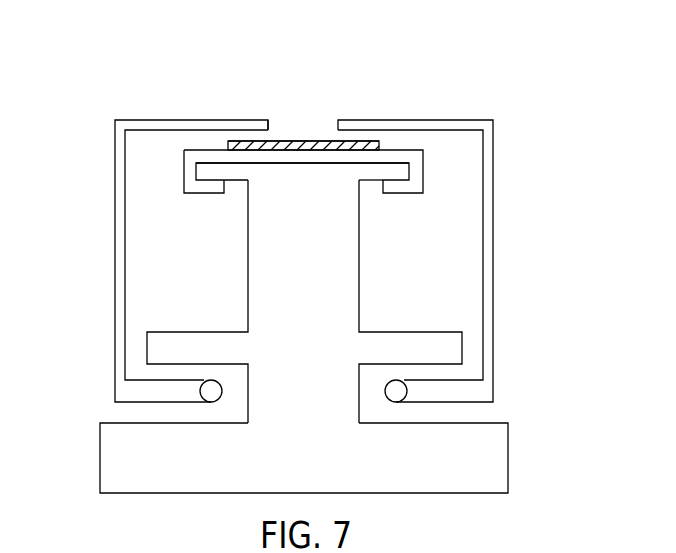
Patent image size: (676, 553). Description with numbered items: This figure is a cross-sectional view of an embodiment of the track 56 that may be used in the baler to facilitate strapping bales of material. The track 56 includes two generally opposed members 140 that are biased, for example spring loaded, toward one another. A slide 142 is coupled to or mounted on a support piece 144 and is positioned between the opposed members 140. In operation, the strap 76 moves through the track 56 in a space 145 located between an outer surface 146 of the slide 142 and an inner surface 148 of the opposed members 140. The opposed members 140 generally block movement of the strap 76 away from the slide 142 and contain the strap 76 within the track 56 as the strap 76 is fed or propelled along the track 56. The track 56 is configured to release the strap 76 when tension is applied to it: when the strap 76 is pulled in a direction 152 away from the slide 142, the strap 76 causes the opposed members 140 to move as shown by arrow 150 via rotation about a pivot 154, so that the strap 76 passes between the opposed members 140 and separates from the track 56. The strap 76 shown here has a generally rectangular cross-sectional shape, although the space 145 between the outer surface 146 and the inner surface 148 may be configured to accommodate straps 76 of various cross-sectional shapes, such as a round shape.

The track 56 is at (526, 77).
The strap 76 is at (262, 141).
The opposed members 140 is at (171, 120).
The slide 142 is at (417, 184).
The support piece 144 is at (332, 285).
The space 145 is at (295, 140).
The outer surface 146 is at (310, 155).
The inner surface 148 is at (198, 129).
The arrow 150 is at (123, 93).
The direction 152 is at (291, 98).
The pivot 154 is at (190, 408).